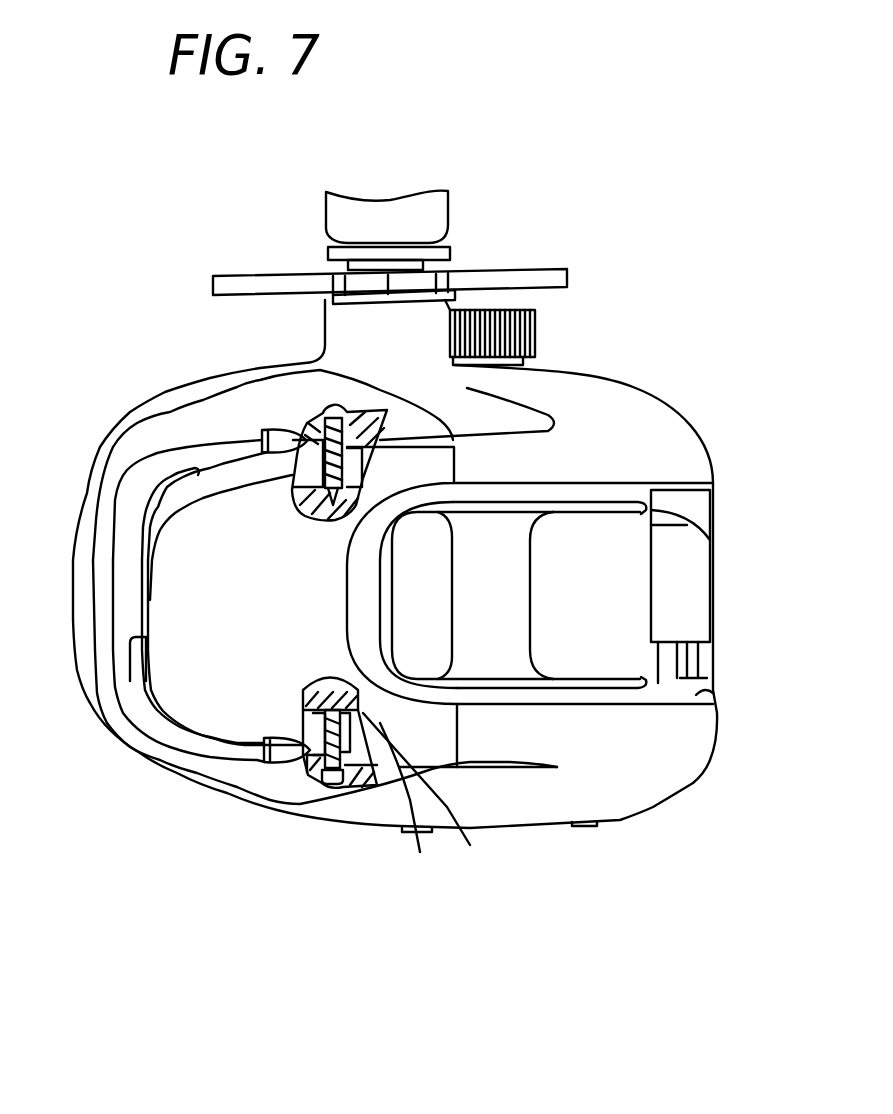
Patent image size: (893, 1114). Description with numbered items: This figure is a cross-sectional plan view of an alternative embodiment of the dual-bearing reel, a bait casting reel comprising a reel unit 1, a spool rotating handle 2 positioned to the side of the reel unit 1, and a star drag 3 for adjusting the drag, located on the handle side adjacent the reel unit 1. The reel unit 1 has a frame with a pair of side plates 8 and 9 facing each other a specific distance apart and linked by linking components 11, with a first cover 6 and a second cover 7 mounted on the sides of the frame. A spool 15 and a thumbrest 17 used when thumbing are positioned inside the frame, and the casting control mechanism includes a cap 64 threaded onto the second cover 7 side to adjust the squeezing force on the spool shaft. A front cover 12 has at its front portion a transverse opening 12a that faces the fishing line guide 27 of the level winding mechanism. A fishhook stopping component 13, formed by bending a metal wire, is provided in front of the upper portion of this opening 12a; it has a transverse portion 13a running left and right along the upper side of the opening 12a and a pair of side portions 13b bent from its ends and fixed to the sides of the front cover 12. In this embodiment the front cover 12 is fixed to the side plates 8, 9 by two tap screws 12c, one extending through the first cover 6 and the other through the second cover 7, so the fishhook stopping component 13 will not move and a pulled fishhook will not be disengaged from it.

The reel unit 1 is at (630, 360).
The spool rotating handle 2 is at (448, 253).
The star drag 3 is at (548, 270).
The cap 64 is at (520, 331).
The second cover 7 is at (452, 448).
The side plate 9 is at (627, 493).
The spool 15 is at (510, 600).
The thumbrest 17 is at (690, 582).
The linking component 11 is at (668, 660).
The side plate 8 is at (713, 693).
The first cover 6 is at (652, 787).
The front cover 12 is at (295, 784).
The opening 12a is at (197, 703).
The tap screw 12c is at (327, 412).
The fishhook stopping component 13 is at (205, 757).
The transverse portion 13a is at (103, 627).
The side portion 13b is at (228, 745).
The fishing line guide 27 is at (158, 672).